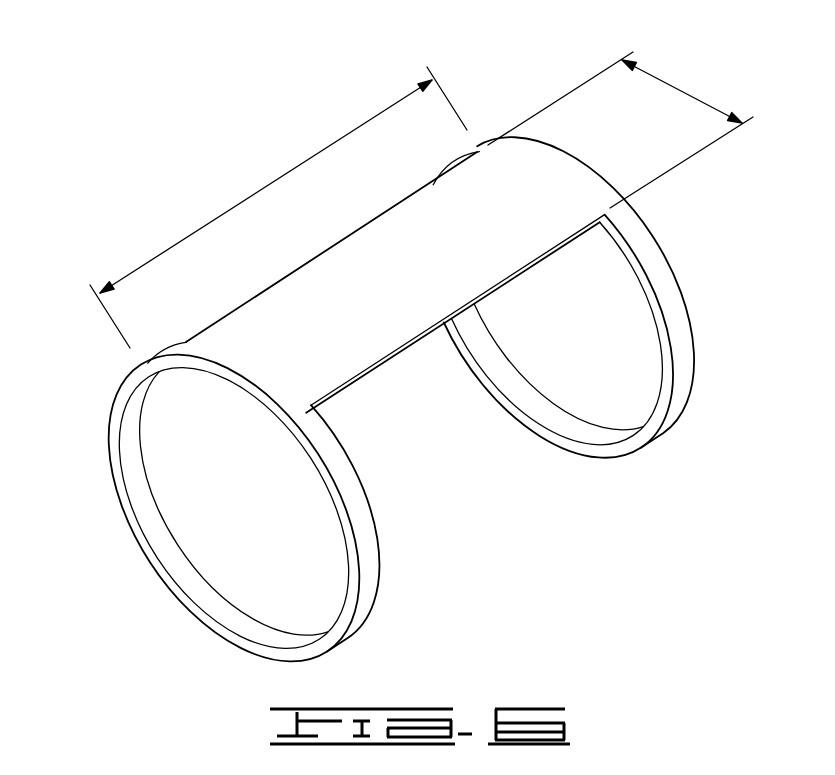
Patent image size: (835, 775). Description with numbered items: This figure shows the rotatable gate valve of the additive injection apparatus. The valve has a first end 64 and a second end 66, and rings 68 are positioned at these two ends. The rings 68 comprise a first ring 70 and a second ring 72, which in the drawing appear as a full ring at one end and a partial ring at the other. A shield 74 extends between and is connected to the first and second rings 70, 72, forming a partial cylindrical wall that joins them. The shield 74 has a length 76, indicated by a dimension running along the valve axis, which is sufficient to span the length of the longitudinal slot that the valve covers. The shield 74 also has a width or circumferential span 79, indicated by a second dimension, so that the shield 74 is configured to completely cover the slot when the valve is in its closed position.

The first end 64 is at (416, 421).
The second end 66 is at (260, 508).
The rings 68 is at (624, 297).
The first ring 70 is at (682, 370).
The second ring 72 is at (368, 578).
The shield 74 is at (390, 367).
The length 76 is at (225, 210).
The width or circumferential span 79 is at (682, 88).